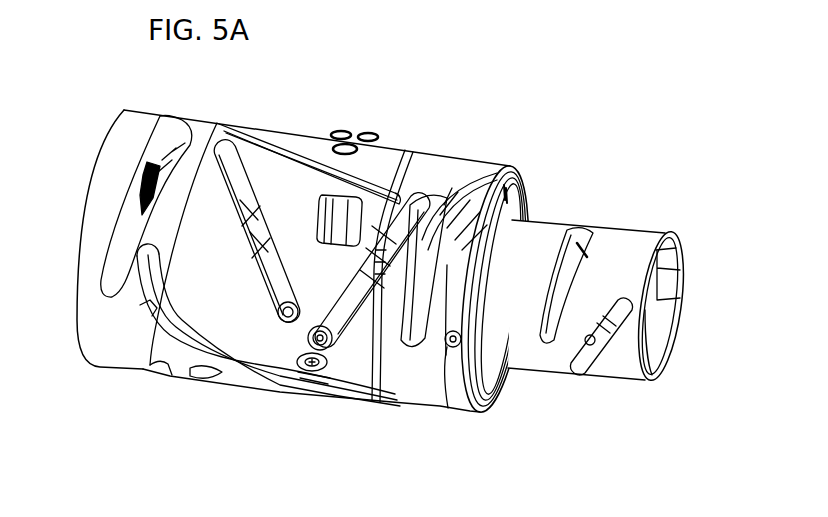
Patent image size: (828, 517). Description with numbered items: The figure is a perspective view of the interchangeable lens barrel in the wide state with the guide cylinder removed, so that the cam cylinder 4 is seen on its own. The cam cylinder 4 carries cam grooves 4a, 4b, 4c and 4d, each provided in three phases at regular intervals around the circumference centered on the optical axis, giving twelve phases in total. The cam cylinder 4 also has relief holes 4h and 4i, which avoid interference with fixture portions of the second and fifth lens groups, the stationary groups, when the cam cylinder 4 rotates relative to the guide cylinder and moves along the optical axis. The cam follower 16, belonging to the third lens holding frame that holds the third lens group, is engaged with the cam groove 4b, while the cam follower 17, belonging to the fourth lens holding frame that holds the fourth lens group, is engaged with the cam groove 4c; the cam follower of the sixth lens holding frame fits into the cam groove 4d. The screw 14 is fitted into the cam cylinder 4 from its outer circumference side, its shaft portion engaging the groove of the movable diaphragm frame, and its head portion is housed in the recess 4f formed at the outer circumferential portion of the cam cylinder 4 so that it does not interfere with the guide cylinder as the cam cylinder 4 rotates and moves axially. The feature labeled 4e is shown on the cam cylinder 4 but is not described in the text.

The cam cylinder 4 is at (393, 147).
The cam groove 4a is at (148, 315).
The cam groove 4b is at (257, 275).
The cam groove 4c is at (356, 395).
The cam groove 4d is at (592, 346).
The pin 4e is at (454, 350).
The recess 4f is at (323, 384).
The relief hole 4h is at (127, 212).
The relief hole 4i is at (480, 180).
The screw 14 is at (307, 371).
The cam follower 16 is at (281, 323).
The cam follower 17 is at (333, 356).